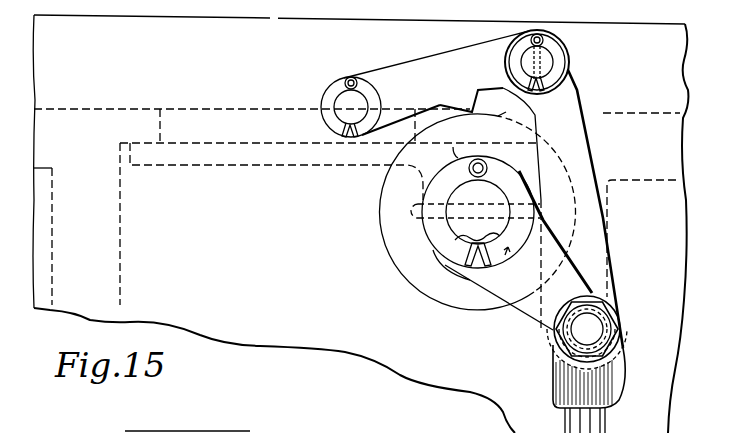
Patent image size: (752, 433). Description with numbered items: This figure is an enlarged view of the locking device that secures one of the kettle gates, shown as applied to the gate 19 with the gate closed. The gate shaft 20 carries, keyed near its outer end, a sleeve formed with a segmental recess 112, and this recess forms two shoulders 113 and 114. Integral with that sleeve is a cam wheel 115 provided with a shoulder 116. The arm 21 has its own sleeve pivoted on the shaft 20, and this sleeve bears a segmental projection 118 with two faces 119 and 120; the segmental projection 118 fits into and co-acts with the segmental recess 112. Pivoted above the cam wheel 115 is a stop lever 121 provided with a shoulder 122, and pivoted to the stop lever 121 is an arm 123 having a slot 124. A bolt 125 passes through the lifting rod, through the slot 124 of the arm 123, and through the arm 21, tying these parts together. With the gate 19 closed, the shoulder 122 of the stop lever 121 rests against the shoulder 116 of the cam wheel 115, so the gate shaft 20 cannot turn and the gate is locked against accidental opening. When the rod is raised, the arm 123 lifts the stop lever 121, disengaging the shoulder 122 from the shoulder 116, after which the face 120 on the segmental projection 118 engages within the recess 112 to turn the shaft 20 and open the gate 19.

The gate 19 is at (280, 158).
The gate shaft 20 is at (462, 200).
The arm 21 is at (530, 308).
The segmental recess 112 is at (478, 212).
The shoulder 113 is at (437, 245).
The shoulder 114 is at (498, 210).
The cam wheel 115 is at (383, 230).
The shoulder 116 is at (505, 123).
The segmental projection 118 is at (441, 262).
The face 119 is at (466, 268).
The face 120 is at (507, 262).
The stop lever 121 is at (402, 68).
The shoulder 122 is at (465, 100).
The arm 123 is at (580, 150).
The slot 124 is at (612, 360).
The bolt 125 is at (605, 318).